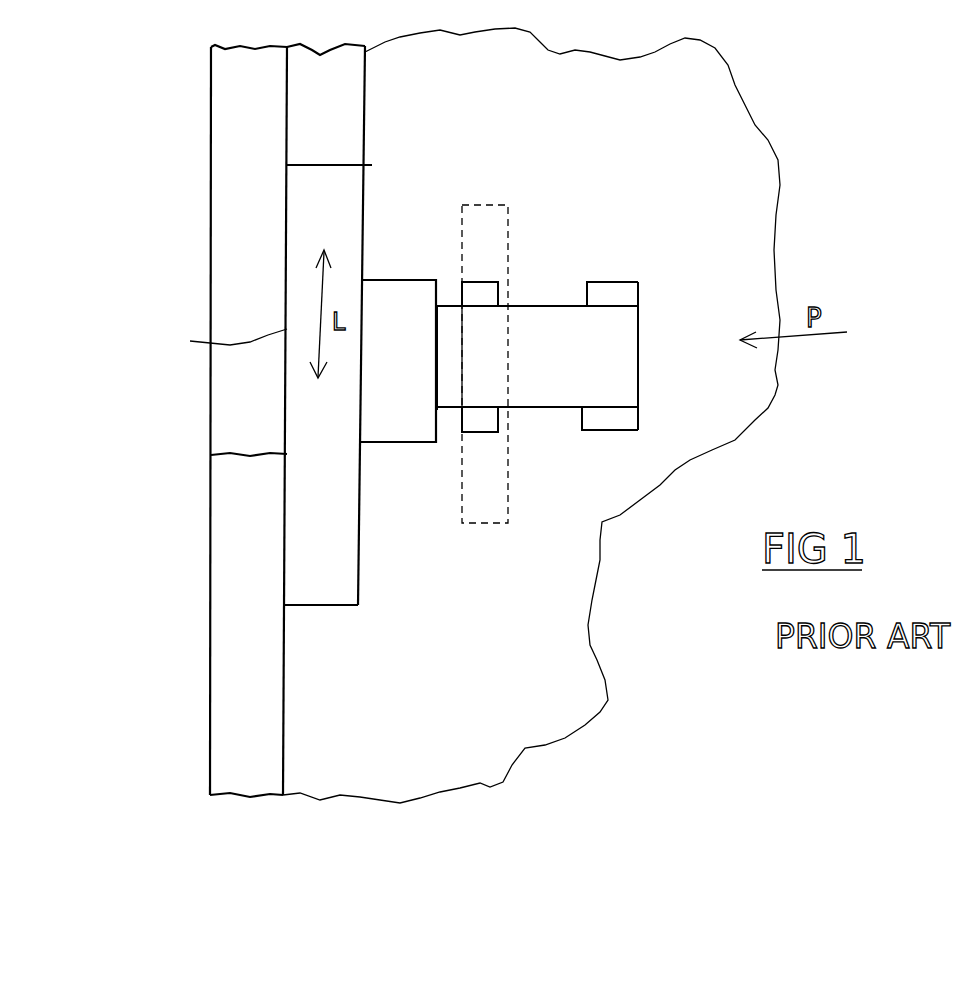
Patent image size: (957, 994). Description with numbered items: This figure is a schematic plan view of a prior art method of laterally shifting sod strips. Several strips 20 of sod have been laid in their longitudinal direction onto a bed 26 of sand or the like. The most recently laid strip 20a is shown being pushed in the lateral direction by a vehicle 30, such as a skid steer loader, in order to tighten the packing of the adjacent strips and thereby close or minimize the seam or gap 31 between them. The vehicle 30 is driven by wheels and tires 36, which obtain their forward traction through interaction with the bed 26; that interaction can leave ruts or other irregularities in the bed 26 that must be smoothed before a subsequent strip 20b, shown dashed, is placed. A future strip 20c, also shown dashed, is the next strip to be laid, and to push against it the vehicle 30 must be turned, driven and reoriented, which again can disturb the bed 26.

The strips of sod 20 is at (228, 165).
The most recently laid strip 20a is at (343, 218).
The subsequent strip 20b is at (497, 514).
The future strip 20c is at (342, 673).
The bed 26 is at (561, 169).
The vehicle 30 is at (640, 345).
The seam or gap 31 is at (216, 332).
The wheels and tires 36 is at (487, 291).